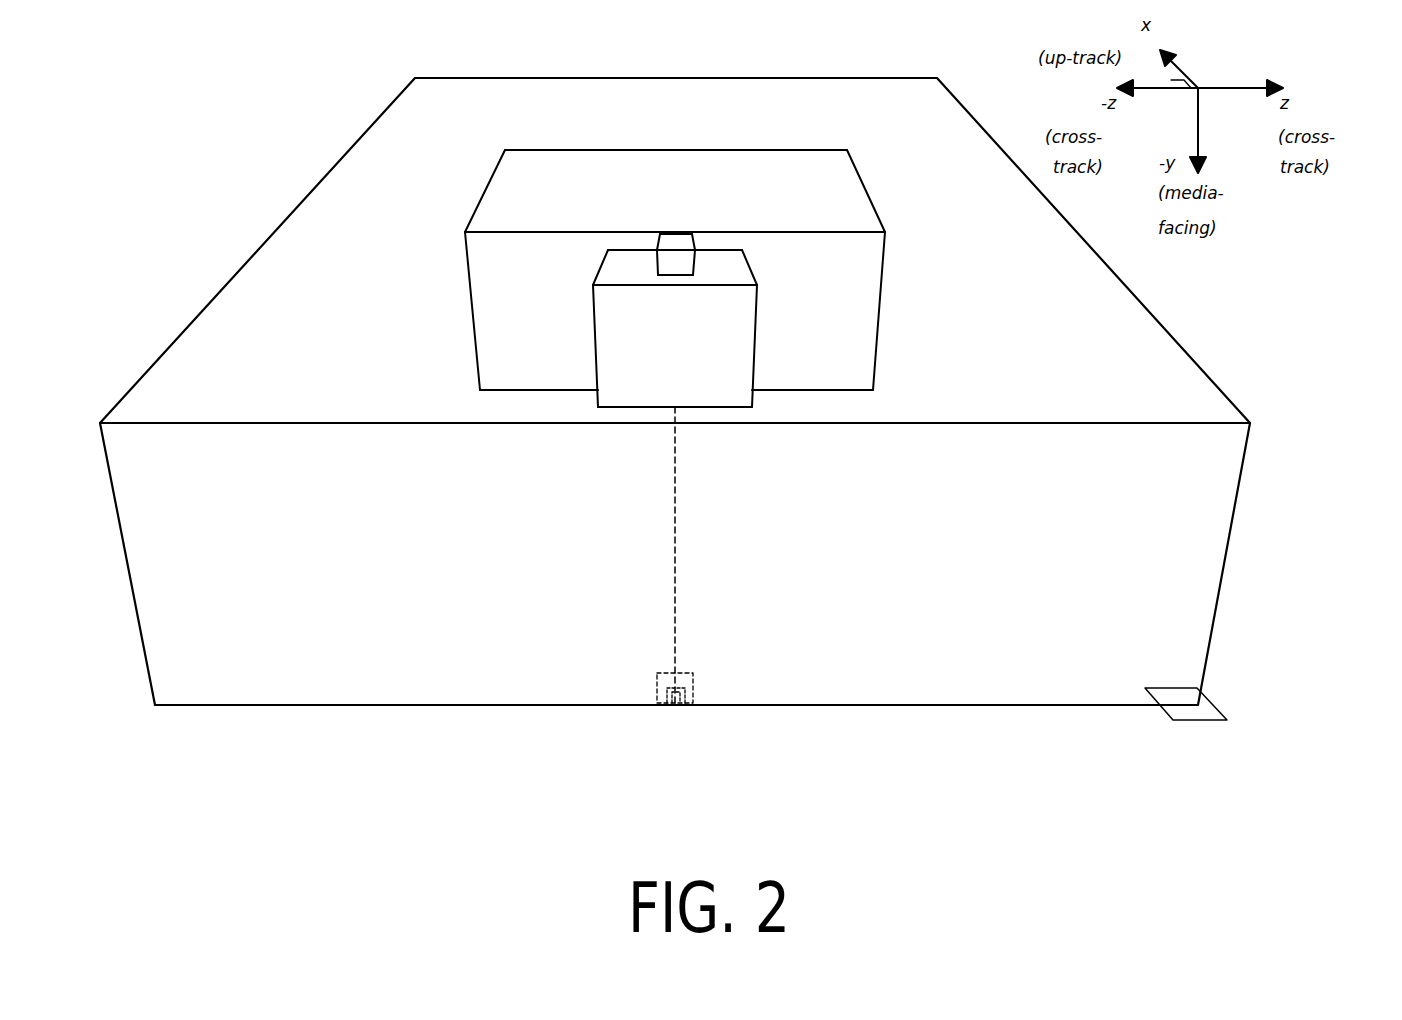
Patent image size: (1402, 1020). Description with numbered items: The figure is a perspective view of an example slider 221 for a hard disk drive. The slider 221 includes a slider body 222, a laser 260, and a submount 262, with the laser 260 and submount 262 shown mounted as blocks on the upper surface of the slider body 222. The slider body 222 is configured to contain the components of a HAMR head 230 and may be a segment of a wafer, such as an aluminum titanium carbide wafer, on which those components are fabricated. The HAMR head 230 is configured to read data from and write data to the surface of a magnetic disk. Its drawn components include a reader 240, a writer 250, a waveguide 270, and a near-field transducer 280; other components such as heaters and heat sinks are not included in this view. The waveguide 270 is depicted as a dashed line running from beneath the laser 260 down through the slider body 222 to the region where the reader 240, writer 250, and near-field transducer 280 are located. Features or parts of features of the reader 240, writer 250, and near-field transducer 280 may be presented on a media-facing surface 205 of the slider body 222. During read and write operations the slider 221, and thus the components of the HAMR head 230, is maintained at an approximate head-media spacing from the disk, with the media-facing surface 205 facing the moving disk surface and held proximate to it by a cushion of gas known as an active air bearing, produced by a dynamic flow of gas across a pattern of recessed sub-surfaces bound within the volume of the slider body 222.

The slider 221 is at (675, 375).
The slider body 222 is at (929, 123).
The submount 262 is at (489, 313).
The laser 260 is at (738, 353).
The waveguide 270 is at (675, 626).
The HAMR head 230 is at (724, 574).
The reader 240 is at (670, 684).
The writer 250 is at (690, 684).
The near-field transducer (NFT) 280 is at (678, 705).
The media-facing surface 205 is at (1204, 714).